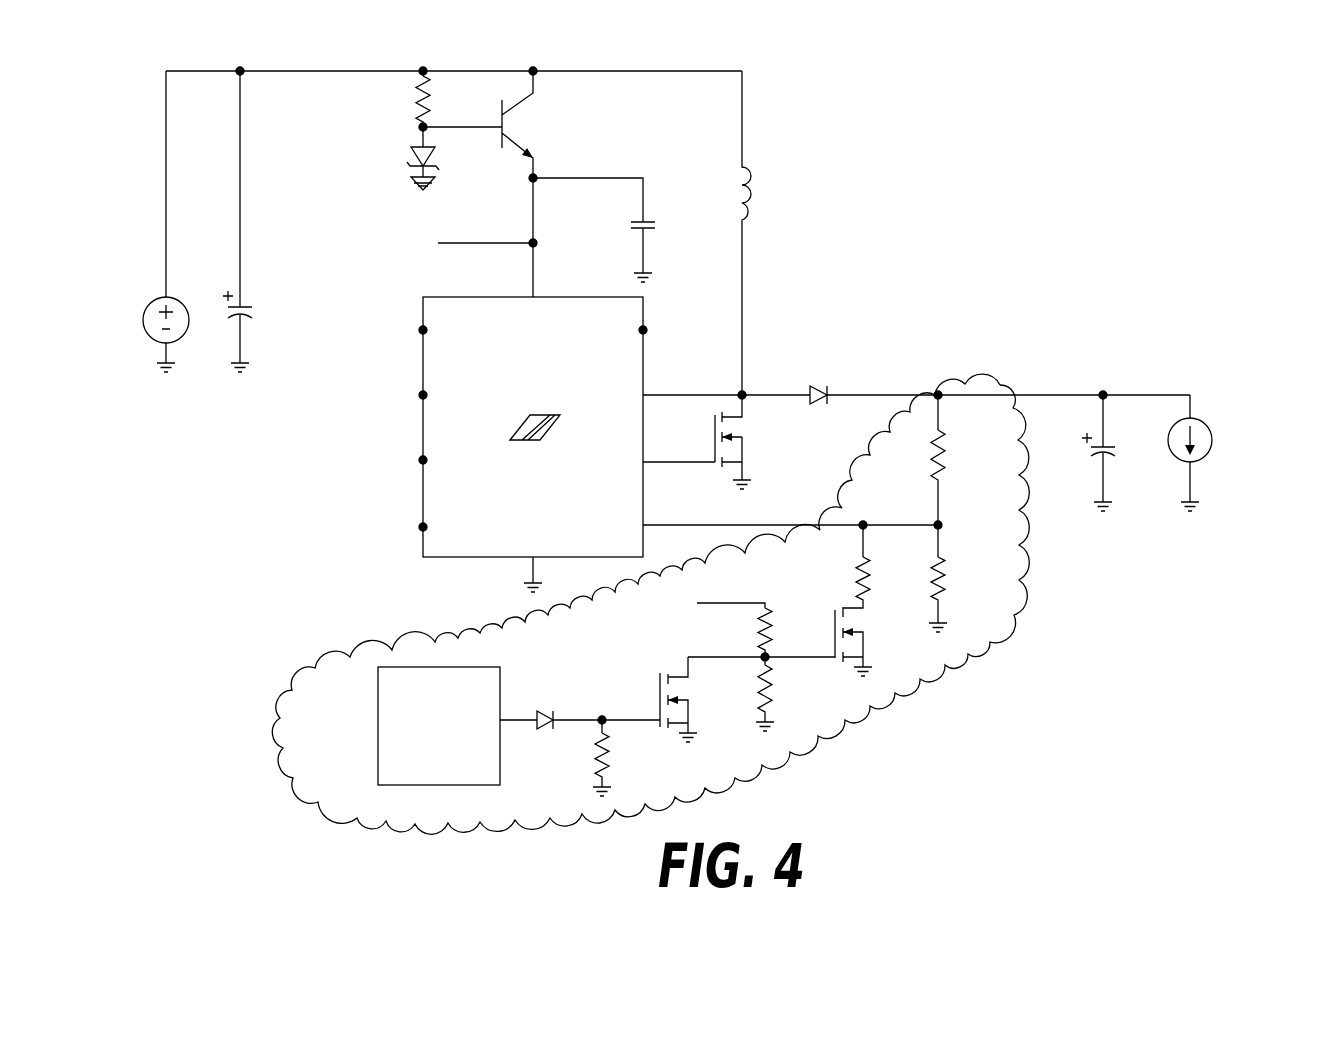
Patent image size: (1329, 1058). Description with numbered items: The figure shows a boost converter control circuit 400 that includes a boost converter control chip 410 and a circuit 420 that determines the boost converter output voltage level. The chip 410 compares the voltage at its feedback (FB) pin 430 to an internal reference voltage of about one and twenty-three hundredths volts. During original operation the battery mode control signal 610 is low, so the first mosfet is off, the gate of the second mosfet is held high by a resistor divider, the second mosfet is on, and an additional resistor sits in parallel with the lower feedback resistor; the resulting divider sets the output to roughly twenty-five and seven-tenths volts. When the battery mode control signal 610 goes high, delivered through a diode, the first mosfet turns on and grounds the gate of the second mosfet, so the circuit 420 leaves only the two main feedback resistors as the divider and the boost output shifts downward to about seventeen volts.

The boost converter control circuit 400 is at (1146, 176).
The boost converter control chip 410 is at (423, 418).
The circuit that determines the boost converter output voltage level 420 is at (1006, 644).
The feedback (FB) pin 430 is at (645, 522).
The battery mode control signal 610 is at (378, 717).